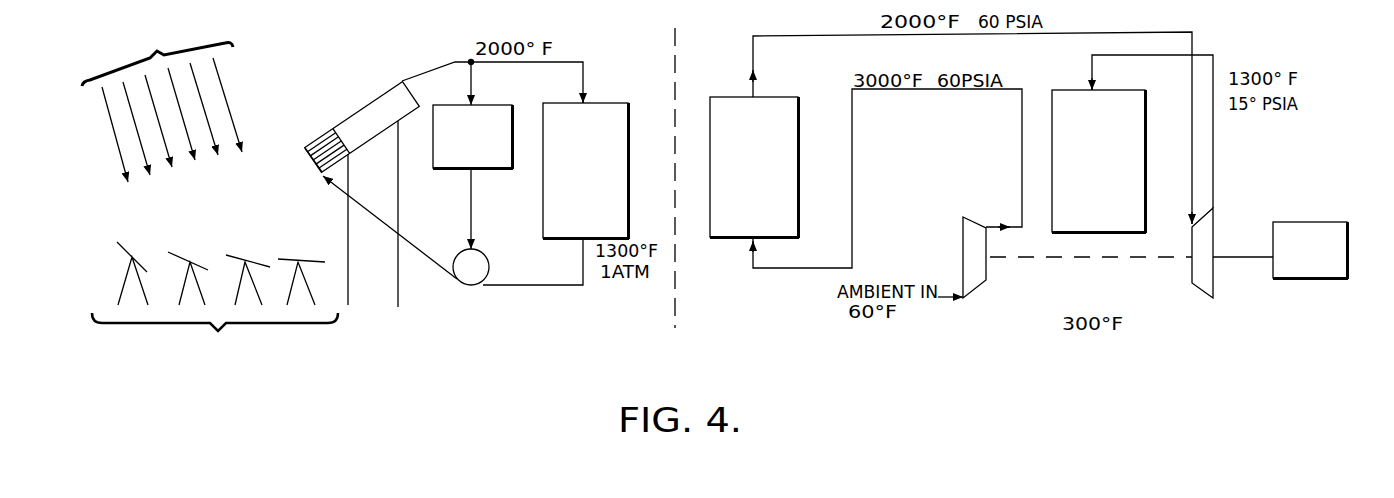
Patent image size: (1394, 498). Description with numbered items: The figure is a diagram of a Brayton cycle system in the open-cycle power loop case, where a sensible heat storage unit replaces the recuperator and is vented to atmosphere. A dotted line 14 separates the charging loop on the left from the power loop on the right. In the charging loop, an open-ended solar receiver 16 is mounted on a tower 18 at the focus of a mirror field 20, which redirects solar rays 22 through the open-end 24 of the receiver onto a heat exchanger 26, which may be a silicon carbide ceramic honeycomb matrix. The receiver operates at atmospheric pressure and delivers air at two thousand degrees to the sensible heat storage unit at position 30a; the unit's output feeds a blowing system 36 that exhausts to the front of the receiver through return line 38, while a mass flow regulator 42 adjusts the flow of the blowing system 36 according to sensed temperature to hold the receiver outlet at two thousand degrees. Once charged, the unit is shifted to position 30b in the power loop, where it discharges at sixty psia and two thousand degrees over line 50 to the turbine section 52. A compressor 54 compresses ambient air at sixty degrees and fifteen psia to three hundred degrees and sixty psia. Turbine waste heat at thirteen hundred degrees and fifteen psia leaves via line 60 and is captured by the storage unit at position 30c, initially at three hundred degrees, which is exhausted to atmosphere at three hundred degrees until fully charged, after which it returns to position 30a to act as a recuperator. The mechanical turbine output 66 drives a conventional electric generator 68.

The dotted line 14 is at (690, 178).
The open-ended solar receiver 16 is at (366, 101).
The tower 18 is at (380, 221).
The mirror field 20 is at (215, 296).
The solar rays 22 is at (162, 105).
The open-end 24 is at (307, 167).
The heat exchanger 26 is at (316, 147).
The sensible heat storage unit 30a is at (629, 130).
The sensible heat storage unit 30b is at (799, 128).
The sensible heat storage unit 30c is at (1146, 120).
The blowing system 36 is at (456, 256).
The return line 38 is at (320, 180).
The mass flow regulator 42 is at (492, 104).
The line 50 is at (790, 36).
The turbine section 52 is at (1220, 284).
The compressor 54 is at (983, 288).
The line 60 is at (1214, 178).
The mechanical turbine output 66 is at (1230, 255).
The electric generator 68 is at (1322, 222).